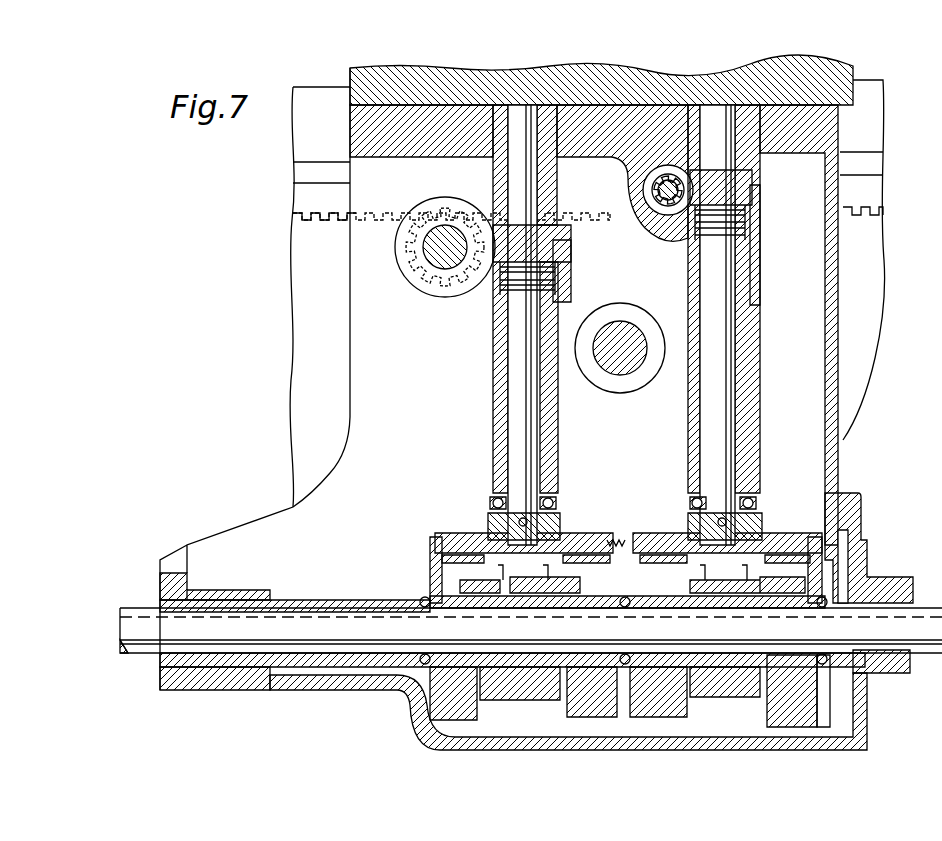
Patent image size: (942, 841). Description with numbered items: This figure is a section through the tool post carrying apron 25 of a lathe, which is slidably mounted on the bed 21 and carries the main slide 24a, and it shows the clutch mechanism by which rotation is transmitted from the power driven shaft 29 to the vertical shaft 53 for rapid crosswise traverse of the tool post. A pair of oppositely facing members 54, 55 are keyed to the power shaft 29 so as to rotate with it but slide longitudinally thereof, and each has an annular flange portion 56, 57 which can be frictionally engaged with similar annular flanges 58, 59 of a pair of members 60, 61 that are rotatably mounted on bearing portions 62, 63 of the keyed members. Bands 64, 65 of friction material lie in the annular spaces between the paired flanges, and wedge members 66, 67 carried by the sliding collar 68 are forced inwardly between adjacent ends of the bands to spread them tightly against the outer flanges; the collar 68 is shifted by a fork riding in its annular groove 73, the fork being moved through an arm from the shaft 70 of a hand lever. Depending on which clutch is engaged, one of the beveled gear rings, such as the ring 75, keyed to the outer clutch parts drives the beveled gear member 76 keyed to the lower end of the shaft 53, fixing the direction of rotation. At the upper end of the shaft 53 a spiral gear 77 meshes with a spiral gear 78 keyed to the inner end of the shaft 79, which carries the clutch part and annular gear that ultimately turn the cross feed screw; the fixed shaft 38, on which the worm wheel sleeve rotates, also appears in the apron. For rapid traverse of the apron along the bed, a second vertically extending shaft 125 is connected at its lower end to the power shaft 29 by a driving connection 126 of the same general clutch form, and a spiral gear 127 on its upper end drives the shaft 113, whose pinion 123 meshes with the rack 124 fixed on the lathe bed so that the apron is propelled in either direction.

The main slide 24a is at (626, 82).
The bed 21 is at (302, 383).
The tool post carrying apron 25 is at (837, 407).
The rack 124 is at (305, 221).
The pinion 123 is at (437, 262).
The shaft 113 is at (440, 262).
The driving connection 126 is at (458, 290).
The spiral gear 127 is at (533, 257).
The vertically extending shaft 125 is at (520, 407).
The vertical shaft 53 is at (725, 332).
The spiral gear 77 is at (750, 175).
The spiral gear 78 is at (644, 188).
The shaft 79 is at (666, 218).
The fixed shaft 38 is at (630, 328).
The member 61 is at (810, 563).
The power driven shaft 29 is at (137, 641).
The member 60 is at (626, 556).
The shaft 70 is at (630, 550).
The annular flange 58 is at (642, 540).
The wedge member 66 is at (683, 535).
The beveled gear member 76 is at (685, 533).
The annular flange 59 is at (767, 540).
The wedge member 67 is at (760, 542).
The beveled gear ring 75 is at (807, 532).
The bearing portion 62 is at (650, 590).
The annular flange portion 56 is at (686, 590).
The member 54 is at (703, 598).
The member 55 is at (743, 590).
The annular flange portion 57 is at (797, 583).
The bearing portion 63 is at (797, 655).
The sliding collar 68 is at (730, 687).
The annular groove 73 is at (760, 700).
The band of friction material 64 is at (687, 697).
The band of friction material 65 is at (763, 700).